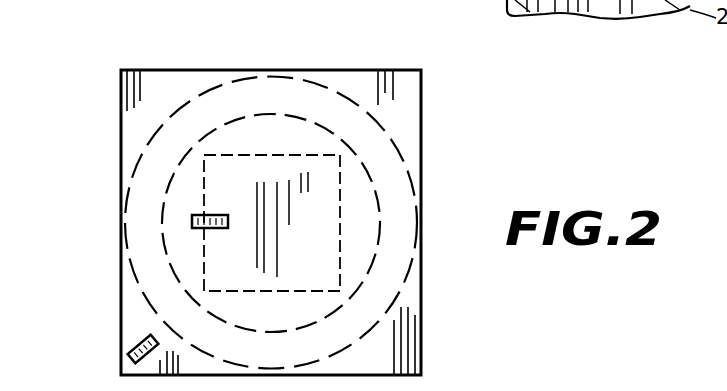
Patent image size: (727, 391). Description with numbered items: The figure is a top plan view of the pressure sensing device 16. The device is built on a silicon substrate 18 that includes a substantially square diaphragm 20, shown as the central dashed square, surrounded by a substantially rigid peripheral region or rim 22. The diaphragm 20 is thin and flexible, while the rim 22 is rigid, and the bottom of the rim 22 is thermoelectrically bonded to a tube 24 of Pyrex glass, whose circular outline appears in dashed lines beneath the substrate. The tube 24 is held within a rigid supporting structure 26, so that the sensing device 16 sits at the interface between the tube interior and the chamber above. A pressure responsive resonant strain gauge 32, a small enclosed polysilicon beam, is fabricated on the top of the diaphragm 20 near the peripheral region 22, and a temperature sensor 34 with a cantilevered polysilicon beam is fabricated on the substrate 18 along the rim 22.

The pressure sensing device 16 is at (196, 50).
The silicon substrate 18 is at (405, 117).
The diaphragm 20 is at (315, 213).
The peripheral rim 22 is at (380, 293).
The tube 24 is at (141, 167).
The supporting structure 26 is at (557, 14).
The resonant strain gauge 32 is at (236, 198).
The temperature sensor 34 is at (140, 343).